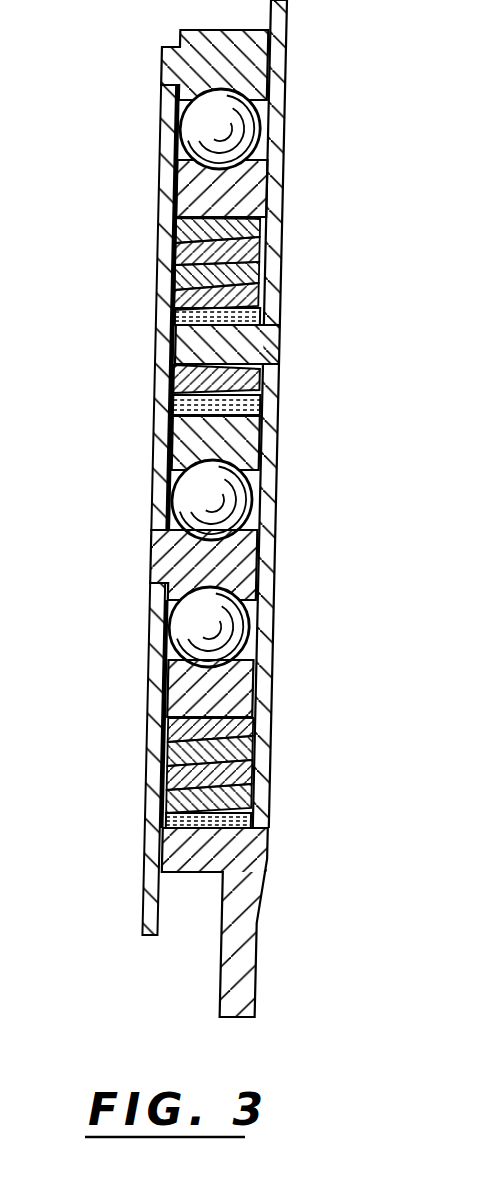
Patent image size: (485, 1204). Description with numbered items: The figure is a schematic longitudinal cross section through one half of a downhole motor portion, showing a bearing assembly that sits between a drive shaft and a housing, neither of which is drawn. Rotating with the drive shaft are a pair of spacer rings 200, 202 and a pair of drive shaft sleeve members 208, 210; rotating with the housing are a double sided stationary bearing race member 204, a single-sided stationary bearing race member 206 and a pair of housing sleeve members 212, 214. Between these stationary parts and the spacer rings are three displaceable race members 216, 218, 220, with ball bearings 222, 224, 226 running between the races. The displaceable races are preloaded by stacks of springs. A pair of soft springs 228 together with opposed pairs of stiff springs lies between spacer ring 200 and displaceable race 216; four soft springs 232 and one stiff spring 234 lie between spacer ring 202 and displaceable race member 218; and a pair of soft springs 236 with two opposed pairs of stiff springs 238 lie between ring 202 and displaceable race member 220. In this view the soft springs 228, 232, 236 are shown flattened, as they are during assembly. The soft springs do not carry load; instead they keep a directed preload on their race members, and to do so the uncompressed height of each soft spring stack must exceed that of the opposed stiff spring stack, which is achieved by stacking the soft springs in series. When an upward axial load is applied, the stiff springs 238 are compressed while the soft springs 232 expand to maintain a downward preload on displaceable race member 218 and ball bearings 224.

The spacer ring 200 is at (258, 857).
The spacer ring 202 is at (272, 343).
The double sided stationary bearing race member 204 is at (170, 566).
The single-sided stationary bearing race member 206 is at (165, 51).
The drive shaft sleeve member 208 is at (268, 703).
The drive shaft sleeve member 210 is at (280, 198).
The housing sleeve member 212 is at (150, 884).
The housing sleeve member 214 is at (170, 378).
The displaceable race member 216 is at (172, 688).
The displaceable race member 218 is at (184, 440).
The displaceable race member 220 is at (180, 190).
The ball bearings 222 is at (248, 630).
The ball bearings 224 is at (252, 497).
The ball bearings 226 is at (186, 131).
The soft springs 228 is at (174, 823).
The soft springs 232 is at (266, 416).
The stiff spring 234 is at (266, 385).
The soft springs 236 is at (180, 322).
The stiff springs 238 is at (176, 292).